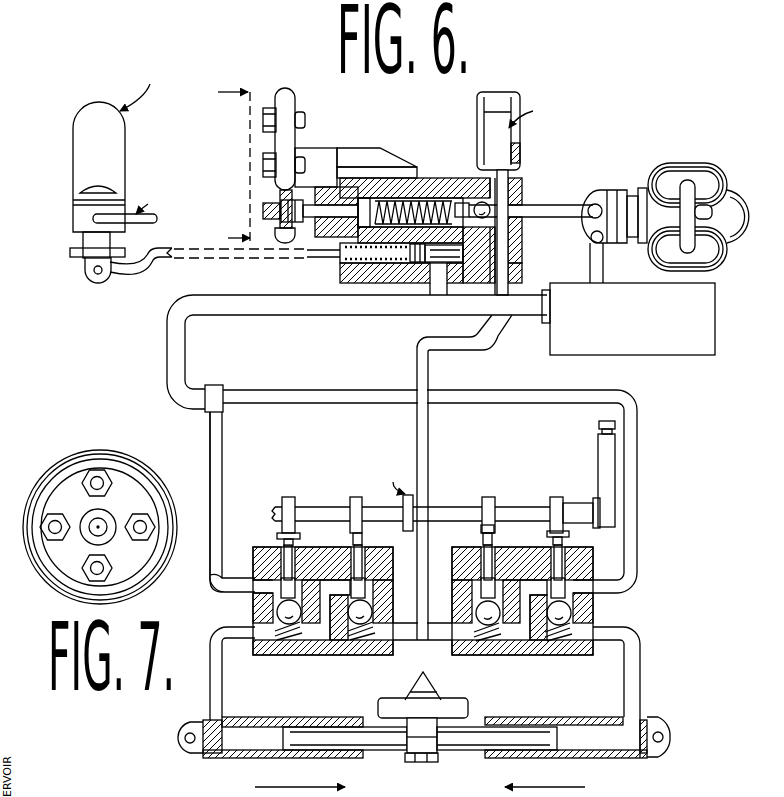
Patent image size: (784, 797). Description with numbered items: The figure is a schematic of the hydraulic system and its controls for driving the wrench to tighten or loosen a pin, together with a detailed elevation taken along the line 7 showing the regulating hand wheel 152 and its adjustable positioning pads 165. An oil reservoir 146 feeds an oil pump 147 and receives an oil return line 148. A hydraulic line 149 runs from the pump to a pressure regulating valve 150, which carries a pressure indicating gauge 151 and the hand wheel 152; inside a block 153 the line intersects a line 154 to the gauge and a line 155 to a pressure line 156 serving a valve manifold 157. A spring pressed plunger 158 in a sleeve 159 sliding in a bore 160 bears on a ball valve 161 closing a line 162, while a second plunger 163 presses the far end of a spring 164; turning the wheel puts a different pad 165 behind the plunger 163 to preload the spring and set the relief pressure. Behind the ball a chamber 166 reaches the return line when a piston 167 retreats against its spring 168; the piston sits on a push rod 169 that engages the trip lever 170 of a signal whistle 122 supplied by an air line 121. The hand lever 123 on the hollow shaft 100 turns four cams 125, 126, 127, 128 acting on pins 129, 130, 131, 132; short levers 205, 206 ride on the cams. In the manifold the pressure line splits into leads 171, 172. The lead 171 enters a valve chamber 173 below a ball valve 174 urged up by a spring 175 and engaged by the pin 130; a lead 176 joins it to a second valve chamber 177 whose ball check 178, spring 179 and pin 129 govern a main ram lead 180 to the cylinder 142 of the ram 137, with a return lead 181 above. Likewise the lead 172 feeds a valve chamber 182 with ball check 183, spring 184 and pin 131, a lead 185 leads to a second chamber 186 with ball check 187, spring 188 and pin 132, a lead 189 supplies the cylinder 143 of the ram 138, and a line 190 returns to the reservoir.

In FIG. 6, the section line 7— 7 is at (227, 166).
In FIG. 6, the hollow shaft 100 is at (443, 509).
In FIG. 6, the air line 121 is at (151, 224).
In FIG. 6, the signal whistle 122 is at (126, 152).
In FIG. 6, the hand lever 123 is at (616, 471).
In FIG. 6, the control valve actuating cam 125 is at (297, 503).
In FIG. 6, the control valve actuating cam 126 is at (378, 490).
In FIG. 6, the control valve actuating cam 127 is at (497, 501).
In FIG. 6, the control valve actuating cam 128 is at (584, 496).
In FIG. 6, the pin 129 is at (283, 540).
In FIG. 6, the pin 130 is at (363, 544).
In FIG. 6, the pin 131 is at (492, 544).
In FIG. 6, the pin 132 is at (560, 539).
In FIG. 6, the actuating ram 137 is at (390, 755).
In FIG. 6, the actuating ram 138 is at (457, 754).
In FIG. 6, the cylinder 142 is at (265, 722).
In FIG. 6, the cylinder 143 is at (575, 720).
In FIG. 6, the oil reservoir 146 is at (715, 317).
In FIG. 6, the oil pump 147 is at (687, 165).
In FIG. 6, the oil return line 148 is at (302, 317).
In FIG. 6, the hydraulic line 149 is at (548, 200).
In FIG. 6, the pressure regulating valve 150 is at (450, 178).
In FIG. 6, the pressure indicating gauge 151 is at (520, 138).
In FIG. 6, the regulating hand wheel 152 is at (297, 97).
In FIG. 7, the regulating hand wheel 152 is at (155, 471).
In FIG. 6, the block 153 is at (522, 250).
In FIG. 6, the line 154 is at (522, 183).
In FIG. 6, the line 155 is at (522, 270).
In FIG. 6, the pressure line 156 is at (429, 370).
In FIG. 6, the valve manifold 157 is at (423, 646).
In FIG. 6, the spring pressed plunger 158 is at (448, 178).
In FIG. 6, the sleeve 159 is at (379, 198).
In FIG. 6, the bore 160 is at (452, 203).
In FIG. 6, the ball valve 161 is at (485, 200).
In FIG. 6, the line 162 is at (497, 210).
In FIG. 6, the second plunger 163 is at (339, 202).
In FIG. 6, the spring 164 is at (398, 198).
In FIG. 6, the adjustable positioning pads 165 is at (304, 126).
In FIG. 7, the adjustable positioning pads 165 is at (104, 478).
In FIG. 6, the chamber 166 is at (527, 229).
In FIG. 6, the piston 167 is at (430, 283).
In FIG. 6, the spring 168 is at (340, 271).
In FIG. 6, the push rod 169 is at (171, 260).
In FIG. 6, the trip lever 170 is at (135, 275).
In FIG. 6, the lead 171 is at (394, 626).
In FIG. 6, the hydraulic lead 172 is at (439, 631).
In FIG. 6, the valve chamber 173 is at (343, 656).
In FIG. 6, the ball valve 174 is at (393, 584).
In FIG. 6, the spring 175 is at (368, 635).
In FIG. 6, the lead 176 is at (327, 588).
In FIG. 6, the second valve chamber 177 is at (273, 654).
In FIG. 6, the ball check 178 is at (254, 611).
In FIG. 6, the spring 179 is at (286, 656).
In FIG. 6, the main ram lead 180 is at (211, 707).
In FIG. 6, the return lead 181 is at (223, 496).
In FIG. 6, the valve chamber 182 is at (521, 651).
In FIG. 6, the ball check 183 is at (471, 612).
In FIG. 6, the spring 184 is at (473, 637).
In FIG. 6, the lead 185 is at (529, 649).
In FIG. 6, the second chamber 186 is at (582, 648).
In FIG. 6, the ball check 187 is at (595, 610).
In FIG. 6, the spring 188 is at (562, 656).
In FIG. 6, the lead 189 is at (641, 683).
In FIG. 6, the line 190 is at (517, 394).
In FIG. 6, the short lever 205 is at (282, 533).
In FIG. 6, the short lever 206 is at (569, 521).